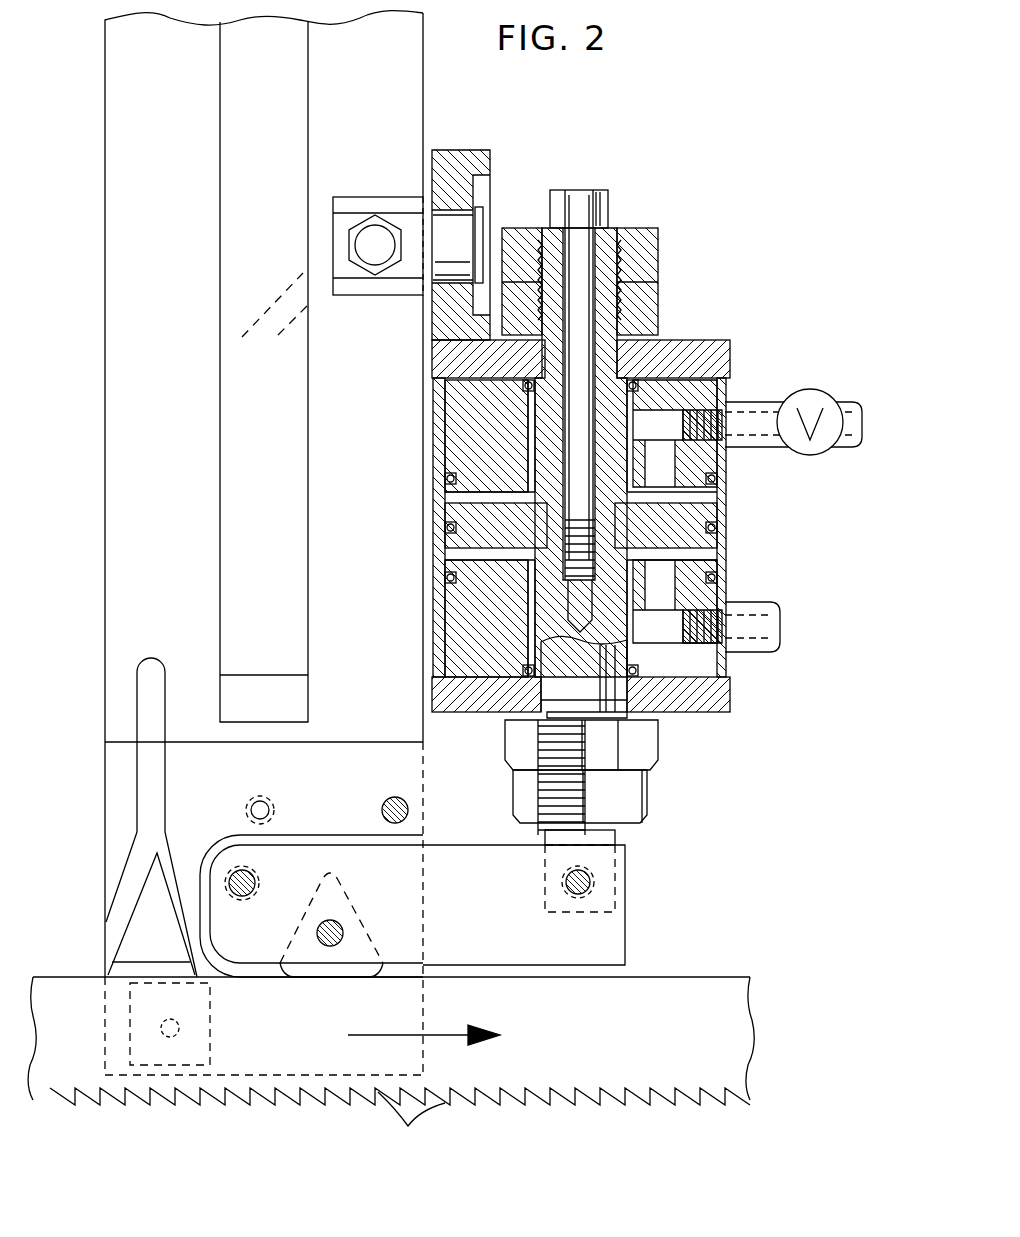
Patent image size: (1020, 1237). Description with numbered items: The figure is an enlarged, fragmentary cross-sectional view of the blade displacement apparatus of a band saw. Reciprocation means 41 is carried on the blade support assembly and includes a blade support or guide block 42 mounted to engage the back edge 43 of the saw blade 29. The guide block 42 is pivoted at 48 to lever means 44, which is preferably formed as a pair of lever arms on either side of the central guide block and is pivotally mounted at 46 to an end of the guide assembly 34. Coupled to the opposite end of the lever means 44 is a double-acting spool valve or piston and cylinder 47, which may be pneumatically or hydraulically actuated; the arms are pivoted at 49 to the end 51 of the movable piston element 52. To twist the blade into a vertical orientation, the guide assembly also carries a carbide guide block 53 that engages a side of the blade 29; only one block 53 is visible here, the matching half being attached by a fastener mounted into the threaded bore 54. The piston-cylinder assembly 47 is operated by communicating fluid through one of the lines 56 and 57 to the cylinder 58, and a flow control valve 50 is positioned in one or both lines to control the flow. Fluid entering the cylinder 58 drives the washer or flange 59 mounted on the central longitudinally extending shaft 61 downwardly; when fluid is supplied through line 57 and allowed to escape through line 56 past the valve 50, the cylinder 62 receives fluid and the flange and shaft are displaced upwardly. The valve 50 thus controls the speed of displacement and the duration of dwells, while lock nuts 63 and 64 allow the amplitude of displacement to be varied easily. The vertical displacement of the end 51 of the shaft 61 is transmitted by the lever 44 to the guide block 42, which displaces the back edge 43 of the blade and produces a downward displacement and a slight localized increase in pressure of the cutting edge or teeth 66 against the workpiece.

The saw blade 29 is at (657, 1085).
The guide assembly 34 is at (103, 440).
The reciprocation means 41 is at (615, 146).
The guide block 42 is at (365, 925).
The back edge 43 is at (720, 977).
The lever means 44 is at (525, 953).
The pivot 46 is at (258, 880).
The piston and cylinder 47 is at (681, 740).
The pivot 48 is at (340, 920).
The pivot 49 is at (588, 880).
The flow control valve 50 is at (822, 388).
The end 51 is at (610, 922).
The movable piston element 52 is at (552, 683).
The guide block 53 is at (206, 1040).
The threaded bore 54 is at (157, 853).
The line 56 is at (752, 400).
The line 57 is at (757, 655).
The cylinder 58 is at (443, 498).
The flange 59 is at (452, 540).
The shaft 61 is at (614, 368).
The cylinder 62 is at (450, 555).
The lock nut 63 is at (662, 300).
The lock nut 64 is at (512, 790).
The cutting edge 66 is at (375, 1090).